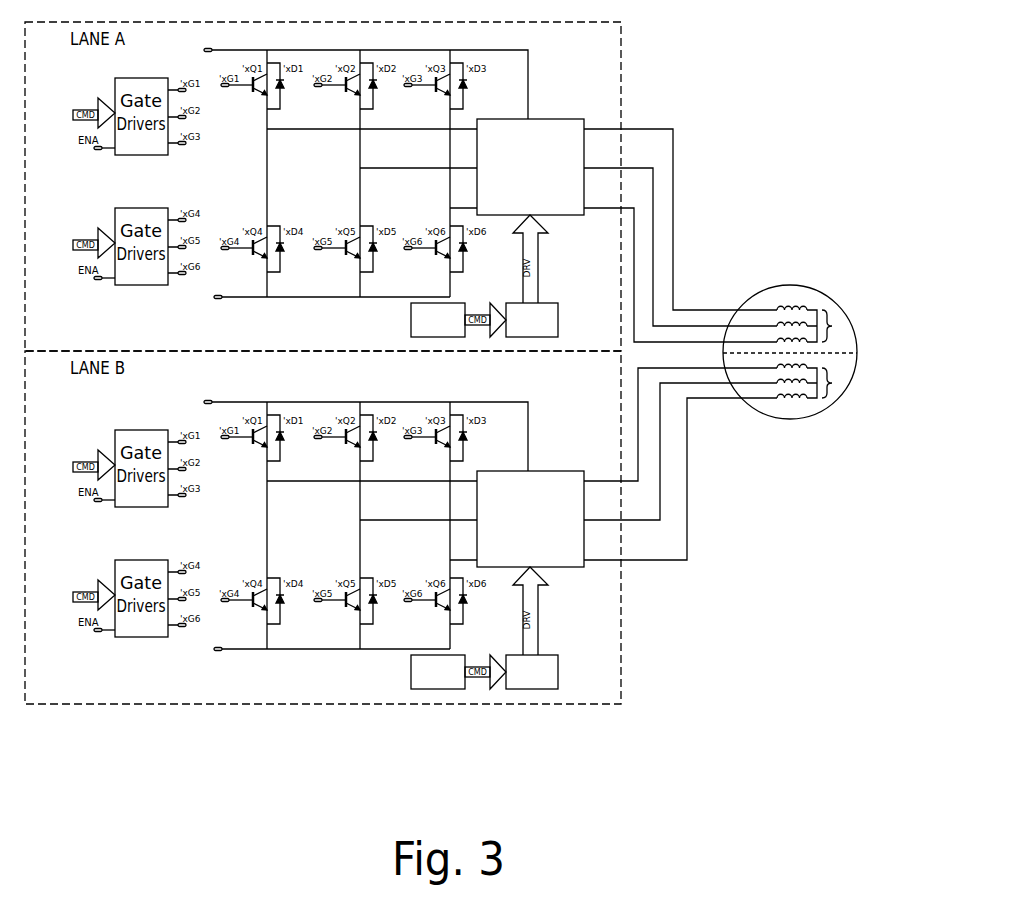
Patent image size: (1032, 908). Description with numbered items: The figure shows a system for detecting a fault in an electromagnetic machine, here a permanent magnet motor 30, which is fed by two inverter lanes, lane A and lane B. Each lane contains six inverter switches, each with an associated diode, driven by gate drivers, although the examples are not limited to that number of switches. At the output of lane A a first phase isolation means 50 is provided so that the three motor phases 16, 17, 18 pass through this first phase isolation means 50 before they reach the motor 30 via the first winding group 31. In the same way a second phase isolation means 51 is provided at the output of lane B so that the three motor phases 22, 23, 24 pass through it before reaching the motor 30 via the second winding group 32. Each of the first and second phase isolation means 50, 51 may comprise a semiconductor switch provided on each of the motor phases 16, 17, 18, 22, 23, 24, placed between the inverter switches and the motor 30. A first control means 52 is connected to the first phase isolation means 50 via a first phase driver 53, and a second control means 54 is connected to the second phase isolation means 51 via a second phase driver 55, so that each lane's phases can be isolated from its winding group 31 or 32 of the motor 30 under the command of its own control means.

The motor phase 16 is at (675, 163).
The motor phase 17 is at (653, 200).
The motor phase 18 is at (635, 230).
The motor phase 22 is at (640, 437).
The motor phase 23 is at (662, 480).
The motor phase 24 is at (686, 533).
The permanent magnet motor 30 is at (856, 333).
The first winding group 31 is at (831, 330).
The second winding group 32 is at (831, 387).
The first phase isolation means 50 is at (555, 119).
The second phase isolation means 51 is at (556, 471).
The first control means 52 is at (411, 319).
The first phase driver 53 is at (558, 318).
The second control means 54 is at (437, 689).
The second phase driver 55 is at (533, 689).